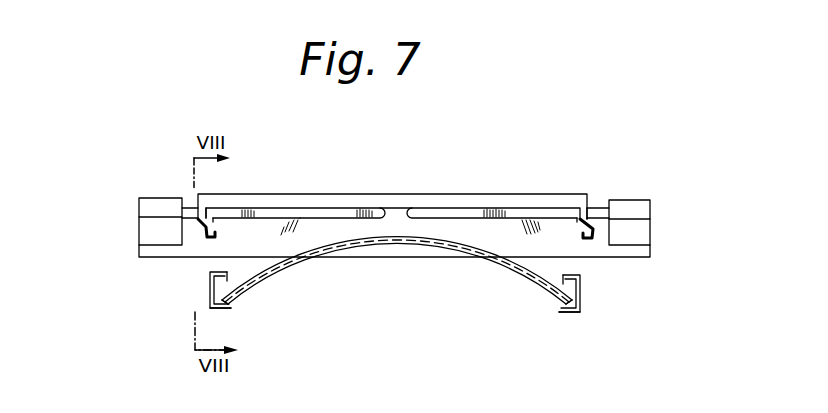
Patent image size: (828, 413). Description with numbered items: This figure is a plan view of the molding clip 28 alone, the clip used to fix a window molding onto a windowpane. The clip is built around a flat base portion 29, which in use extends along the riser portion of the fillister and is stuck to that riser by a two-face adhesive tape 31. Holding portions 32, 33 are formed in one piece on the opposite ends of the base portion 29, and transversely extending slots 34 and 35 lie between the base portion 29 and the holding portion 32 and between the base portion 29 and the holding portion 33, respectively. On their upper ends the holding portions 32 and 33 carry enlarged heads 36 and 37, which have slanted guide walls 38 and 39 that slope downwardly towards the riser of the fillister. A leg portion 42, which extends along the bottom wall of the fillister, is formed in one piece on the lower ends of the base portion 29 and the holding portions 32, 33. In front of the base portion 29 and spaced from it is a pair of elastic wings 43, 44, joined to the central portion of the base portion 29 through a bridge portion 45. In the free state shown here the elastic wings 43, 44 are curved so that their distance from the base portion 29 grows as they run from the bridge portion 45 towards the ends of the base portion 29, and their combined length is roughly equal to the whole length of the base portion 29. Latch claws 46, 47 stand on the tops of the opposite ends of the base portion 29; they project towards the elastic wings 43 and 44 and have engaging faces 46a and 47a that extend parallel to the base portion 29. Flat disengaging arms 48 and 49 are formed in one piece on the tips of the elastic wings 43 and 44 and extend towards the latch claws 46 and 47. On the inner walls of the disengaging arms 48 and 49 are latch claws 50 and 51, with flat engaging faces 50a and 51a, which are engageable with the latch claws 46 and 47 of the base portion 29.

The molding clip 28 is at (491, 190).
The base portion 29 is at (346, 216).
The two-face adhesive tape 31 is at (291, 208).
The holding portion 32 is at (131, 192).
The holding portion 33 is at (654, 192).
The slot 34 is at (194, 210).
The slot 35 is at (601, 216).
The enlarged head 36 is at (140, 232).
The enlarged head 37 is at (653, 236).
The slanted guide wall 38 is at (148, 207).
The slanted guide wall 39 is at (636, 207).
The leg portion 42 is at (190, 248).
The elastic wing 43 is at (397, 278).
The elastic wing 44 is at (487, 262).
The bridge portion 45 is at (413, 215).
The latch claw 46 is at (216, 234).
The engaging face 46a is at (203, 216).
The latch claw 47 is at (582, 235).
The engaging face 47a is at (591, 216).
The disengaging arm 48 is at (207, 294).
The disengaging arm 49 is at (580, 298).
The latch claw 50 is at (228, 280).
The flat engaging face 50a is at (233, 302).
The latch claw 51 is at (566, 280).
The flat engaging face 51a is at (557, 304).